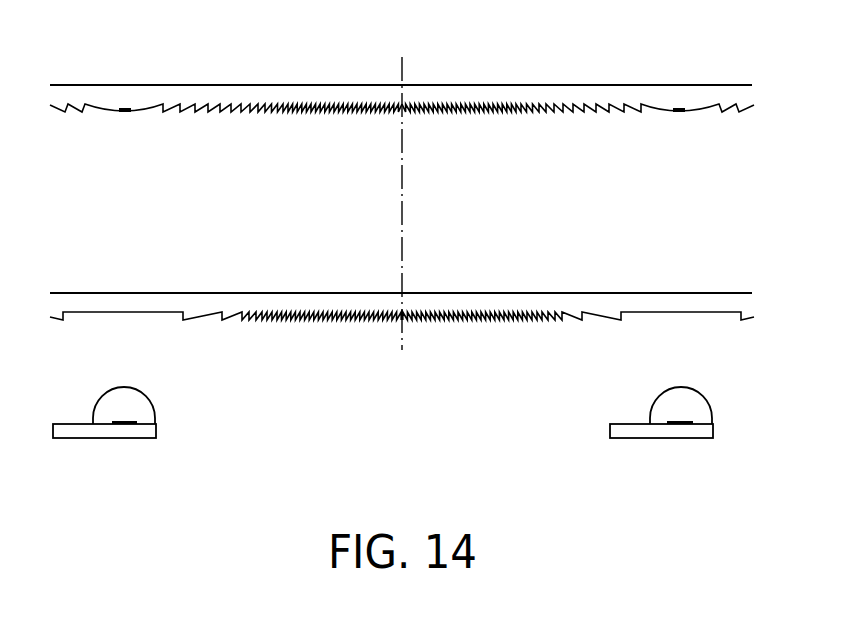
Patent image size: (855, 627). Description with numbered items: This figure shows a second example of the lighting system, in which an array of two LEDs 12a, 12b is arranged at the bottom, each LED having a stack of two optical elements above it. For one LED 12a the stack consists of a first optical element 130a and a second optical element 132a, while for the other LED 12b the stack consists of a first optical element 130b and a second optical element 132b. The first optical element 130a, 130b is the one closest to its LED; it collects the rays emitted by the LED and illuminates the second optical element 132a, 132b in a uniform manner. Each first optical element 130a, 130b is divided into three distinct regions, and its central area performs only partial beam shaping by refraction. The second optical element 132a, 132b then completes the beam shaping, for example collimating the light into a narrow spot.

The second optical element 132a is at (124, 98).
The second optical element 132b is at (680, 98).
The first optical element 130a is at (124, 303).
The first optical element 130b is at (680, 303).
The LED 12a is at (154, 402).
The LED 12b is at (652, 402).